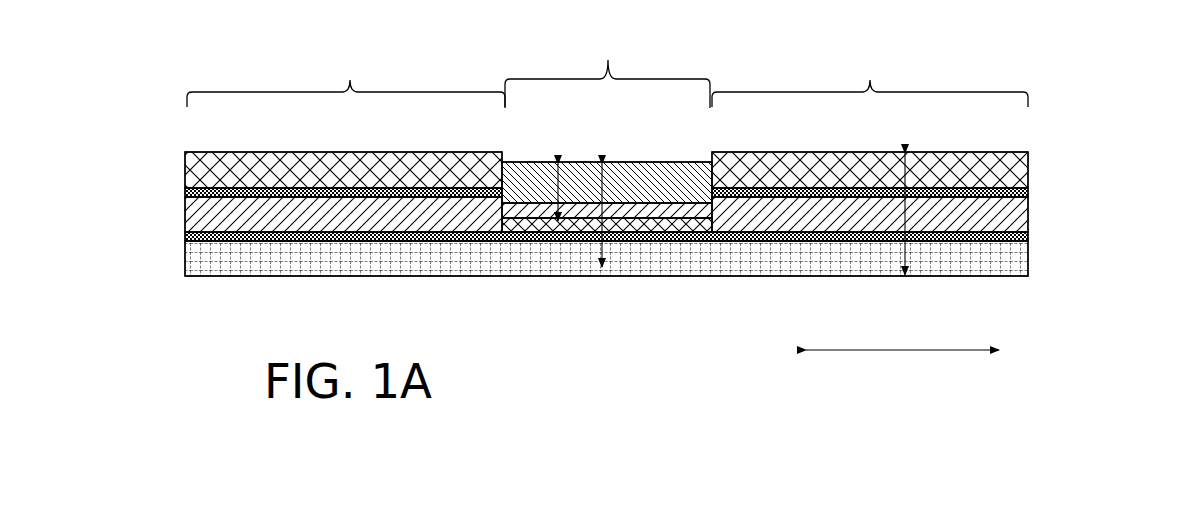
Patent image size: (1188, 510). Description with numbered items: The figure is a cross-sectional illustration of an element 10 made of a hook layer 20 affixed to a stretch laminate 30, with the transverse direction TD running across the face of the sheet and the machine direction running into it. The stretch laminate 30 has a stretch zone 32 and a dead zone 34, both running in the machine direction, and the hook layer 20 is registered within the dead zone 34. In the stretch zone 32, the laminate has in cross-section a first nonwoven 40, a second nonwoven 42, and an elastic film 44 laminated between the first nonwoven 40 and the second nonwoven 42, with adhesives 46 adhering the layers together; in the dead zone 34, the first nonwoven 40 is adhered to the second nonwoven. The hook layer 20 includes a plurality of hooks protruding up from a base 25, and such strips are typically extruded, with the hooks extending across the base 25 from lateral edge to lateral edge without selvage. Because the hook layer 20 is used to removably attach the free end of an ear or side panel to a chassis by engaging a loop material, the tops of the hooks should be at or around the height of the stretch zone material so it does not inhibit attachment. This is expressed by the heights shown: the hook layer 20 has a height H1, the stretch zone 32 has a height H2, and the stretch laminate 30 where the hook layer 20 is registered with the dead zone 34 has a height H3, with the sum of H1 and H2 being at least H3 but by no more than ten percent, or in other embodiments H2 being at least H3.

The element 10 is at (1060, 125).
The hook layer 20 is at (538, 182).
The base 25 is at (683, 210).
The stretch laminate 30 is at (188, 142).
The stretch zone 32 is at (607, 72).
The dead zone 34 is at (607, 65).
The first nonwoven 40 is at (203, 170).
The second nonwoven 42 is at (267, 260).
The elastic film 44 is at (205, 212).
The adhesive 46 is at (183, 192).
The hook layer height H1 is at (558, 172).
The stretch zone height H2 is at (905, 208).
The stretch laminate height at dead zone H3 is at (603, 186).
The transverse direction TD is at (902, 334).